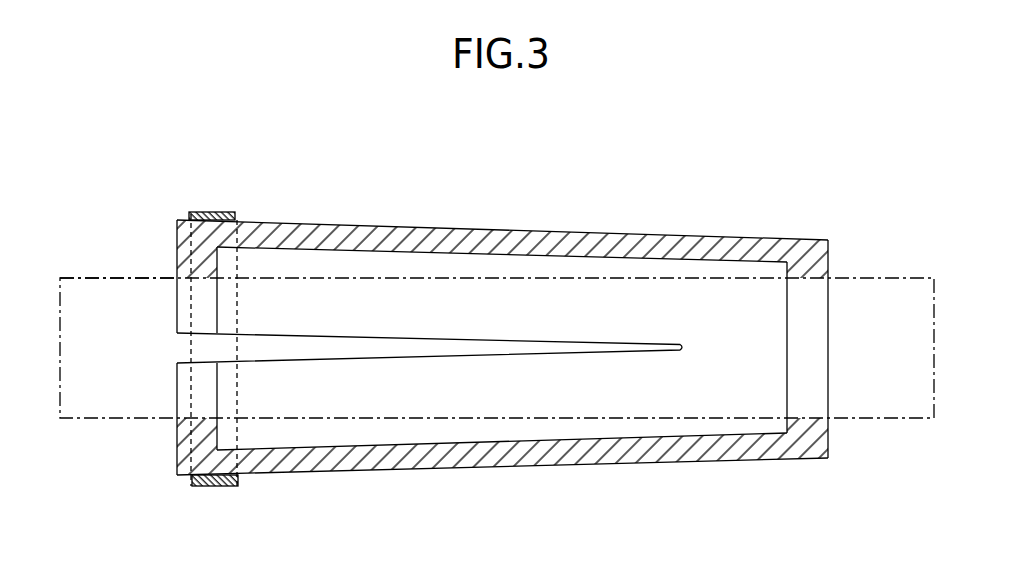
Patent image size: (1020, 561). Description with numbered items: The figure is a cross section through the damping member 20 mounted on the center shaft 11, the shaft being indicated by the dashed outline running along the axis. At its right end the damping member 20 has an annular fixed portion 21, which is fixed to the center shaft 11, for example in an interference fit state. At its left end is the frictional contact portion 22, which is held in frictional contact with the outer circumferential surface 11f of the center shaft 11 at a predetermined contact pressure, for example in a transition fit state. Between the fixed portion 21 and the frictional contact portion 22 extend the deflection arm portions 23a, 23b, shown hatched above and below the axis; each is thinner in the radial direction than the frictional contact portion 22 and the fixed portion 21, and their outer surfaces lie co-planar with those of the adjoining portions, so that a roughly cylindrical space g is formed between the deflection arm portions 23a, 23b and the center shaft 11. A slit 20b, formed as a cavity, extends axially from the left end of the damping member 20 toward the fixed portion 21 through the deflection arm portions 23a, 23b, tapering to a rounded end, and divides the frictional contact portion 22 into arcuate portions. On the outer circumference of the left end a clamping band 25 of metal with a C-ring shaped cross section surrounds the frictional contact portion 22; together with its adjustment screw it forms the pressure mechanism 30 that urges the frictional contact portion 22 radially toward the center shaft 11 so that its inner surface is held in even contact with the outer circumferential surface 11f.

The center shaft 11 is at (127, 420).
The outer circumferential surface of the center shaft 11f is at (147, 274).
The damping member 20 is at (509, 323).
The slit 20b is at (405, 340).
The fixed portion 21 is at (830, 258).
The frictional contact portion 22 is at (177, 247).
The deflection arm portion 23a is at (450, 237).
The deflection arm portion 23b is at (445, 468).
The clamping band 25 is at (215, 212).
The pressure mechanism 30 is at (189, 186).
The space g is at (361, 256).